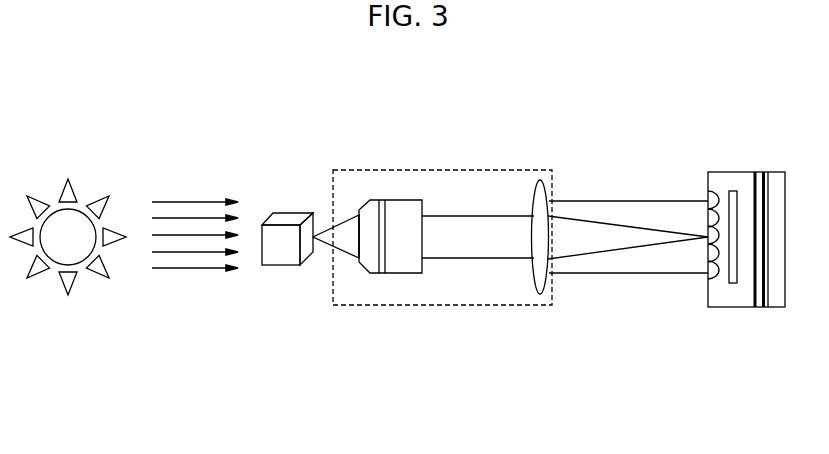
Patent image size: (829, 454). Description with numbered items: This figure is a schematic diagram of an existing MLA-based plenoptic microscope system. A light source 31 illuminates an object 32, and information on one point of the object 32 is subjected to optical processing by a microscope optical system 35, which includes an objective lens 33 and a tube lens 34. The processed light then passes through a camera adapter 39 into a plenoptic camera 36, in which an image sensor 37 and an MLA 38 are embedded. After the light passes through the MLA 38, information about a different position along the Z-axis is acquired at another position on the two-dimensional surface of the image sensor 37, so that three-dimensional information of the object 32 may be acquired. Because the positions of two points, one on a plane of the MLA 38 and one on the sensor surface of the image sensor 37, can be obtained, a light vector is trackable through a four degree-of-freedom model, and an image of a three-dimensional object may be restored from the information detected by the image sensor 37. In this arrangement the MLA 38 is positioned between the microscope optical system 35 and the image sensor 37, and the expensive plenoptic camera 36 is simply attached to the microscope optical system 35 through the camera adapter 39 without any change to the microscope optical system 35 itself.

The light source 31 is at (52, 263).
The object 32 is at (278, 265).
The objective lens 33 is at (381, 273).
The tube lens 34 is at (540, 294).
The microscope optical system 35 is at (446, 170).
The plenoptic camera 36 is at (755, 307).
The image sensor 37 is at (737, 257).
The MLA 38 is at (712, 190).
The camera adapter 39 is at (608, 200).